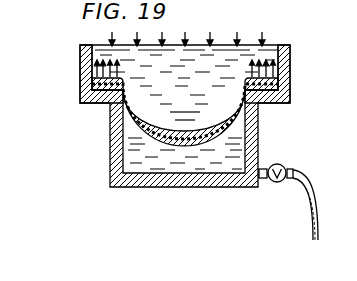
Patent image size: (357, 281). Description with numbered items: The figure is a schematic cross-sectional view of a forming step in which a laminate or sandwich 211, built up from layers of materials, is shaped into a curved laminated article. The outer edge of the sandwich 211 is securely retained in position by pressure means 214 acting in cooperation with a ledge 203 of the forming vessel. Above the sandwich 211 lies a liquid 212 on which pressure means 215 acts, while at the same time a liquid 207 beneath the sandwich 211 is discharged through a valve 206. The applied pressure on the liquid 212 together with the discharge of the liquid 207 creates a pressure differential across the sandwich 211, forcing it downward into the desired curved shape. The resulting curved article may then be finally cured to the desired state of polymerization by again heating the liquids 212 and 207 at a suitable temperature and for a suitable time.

The ledge 203 is at (108, 103).
The valve 206 is at (284, 166).
The liquid 207 is at (148, 142).
The laminate or sandwich 211 is at (140, 130).
The liquid 212 is at (84, 57).
The pressure means 214 is at (82, 67).
The pressure means 215 is at (185, 29).